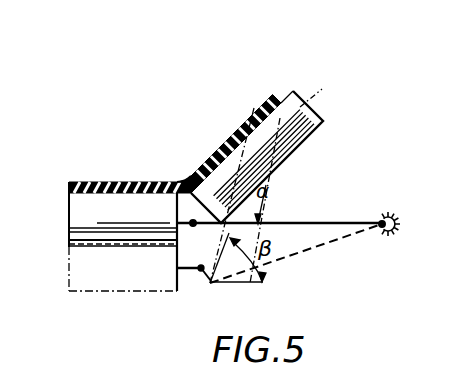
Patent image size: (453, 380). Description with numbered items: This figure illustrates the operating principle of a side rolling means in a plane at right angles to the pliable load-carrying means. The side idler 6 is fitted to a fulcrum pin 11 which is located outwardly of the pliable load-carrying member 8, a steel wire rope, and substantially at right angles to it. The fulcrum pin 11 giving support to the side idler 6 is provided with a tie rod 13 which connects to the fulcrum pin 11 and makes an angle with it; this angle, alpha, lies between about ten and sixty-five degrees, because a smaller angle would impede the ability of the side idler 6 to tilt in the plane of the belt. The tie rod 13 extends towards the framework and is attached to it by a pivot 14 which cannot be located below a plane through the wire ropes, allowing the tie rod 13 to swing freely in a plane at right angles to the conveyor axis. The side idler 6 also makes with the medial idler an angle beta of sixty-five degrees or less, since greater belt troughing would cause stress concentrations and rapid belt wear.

The side rolling means 6 is at (313, 127).
The pliable load-carrying member 8 is at (152, 185).
The fulcrum pin 11 is at (186, 184).
The tie rod 13 is at (307, 221).
The pivot 14 is at (382, 214).